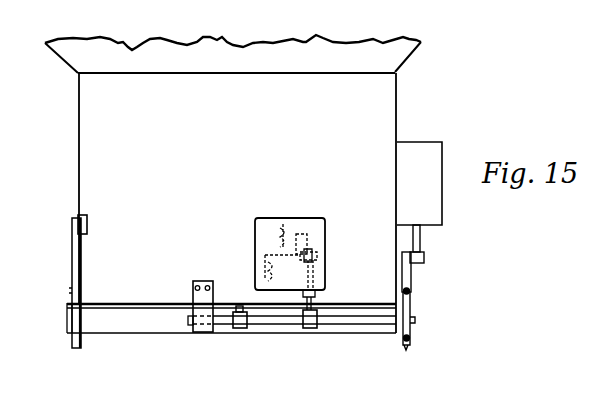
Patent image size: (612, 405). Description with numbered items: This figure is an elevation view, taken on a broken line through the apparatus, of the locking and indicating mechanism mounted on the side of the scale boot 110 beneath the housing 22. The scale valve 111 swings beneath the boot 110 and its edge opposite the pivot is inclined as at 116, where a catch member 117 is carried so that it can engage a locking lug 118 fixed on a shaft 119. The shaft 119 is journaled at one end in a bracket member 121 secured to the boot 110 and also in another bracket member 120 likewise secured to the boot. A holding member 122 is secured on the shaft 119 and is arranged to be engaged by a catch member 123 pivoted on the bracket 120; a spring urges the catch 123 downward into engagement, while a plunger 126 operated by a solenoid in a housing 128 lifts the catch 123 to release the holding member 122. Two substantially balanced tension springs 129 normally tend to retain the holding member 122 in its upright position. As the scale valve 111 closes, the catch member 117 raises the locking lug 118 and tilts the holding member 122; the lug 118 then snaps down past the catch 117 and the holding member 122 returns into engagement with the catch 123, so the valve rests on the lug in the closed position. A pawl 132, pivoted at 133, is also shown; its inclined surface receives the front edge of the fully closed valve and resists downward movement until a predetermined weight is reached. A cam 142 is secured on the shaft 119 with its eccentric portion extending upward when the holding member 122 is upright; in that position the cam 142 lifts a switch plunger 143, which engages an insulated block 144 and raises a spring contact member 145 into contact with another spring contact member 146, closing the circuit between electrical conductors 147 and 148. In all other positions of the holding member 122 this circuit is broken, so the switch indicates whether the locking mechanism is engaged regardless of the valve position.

The housing 22 is at (279, 53).
The boot 110 is at (88, 135).
The scale valve 111 is at (154, 342).
The inclined edge 116 is at (103, 329).
The catch member 117 is at (237, 307).
The locking lug 118 is at (242, 330).
The shaft 119 is at (274, 327).
The bracket member 120 is at (397, 281).
The bracket member 121 is at (203, 334).
The holding member 122 is at (411, 283).
The catch member 123 is at (424, 259).
The plunger 126 is at (420, 238).
The housing 128 is at (428, 148).
The tension springs 129 is at (411, 338).
The pawl 132 is at (72, 254).
The pivot 133 is at (72, 228).
The cam 142 is at (311, 330).
The switch plunger 143 is at (315, 305).
The insulated block 144 is at (322, 257).
The spring contact member 145 is at (272, 250).
The spring contact member 146 is at (310, 243).
The electrical conductor 147 is at (262, 278).
The electrical conductor 148 is at (278, 219).